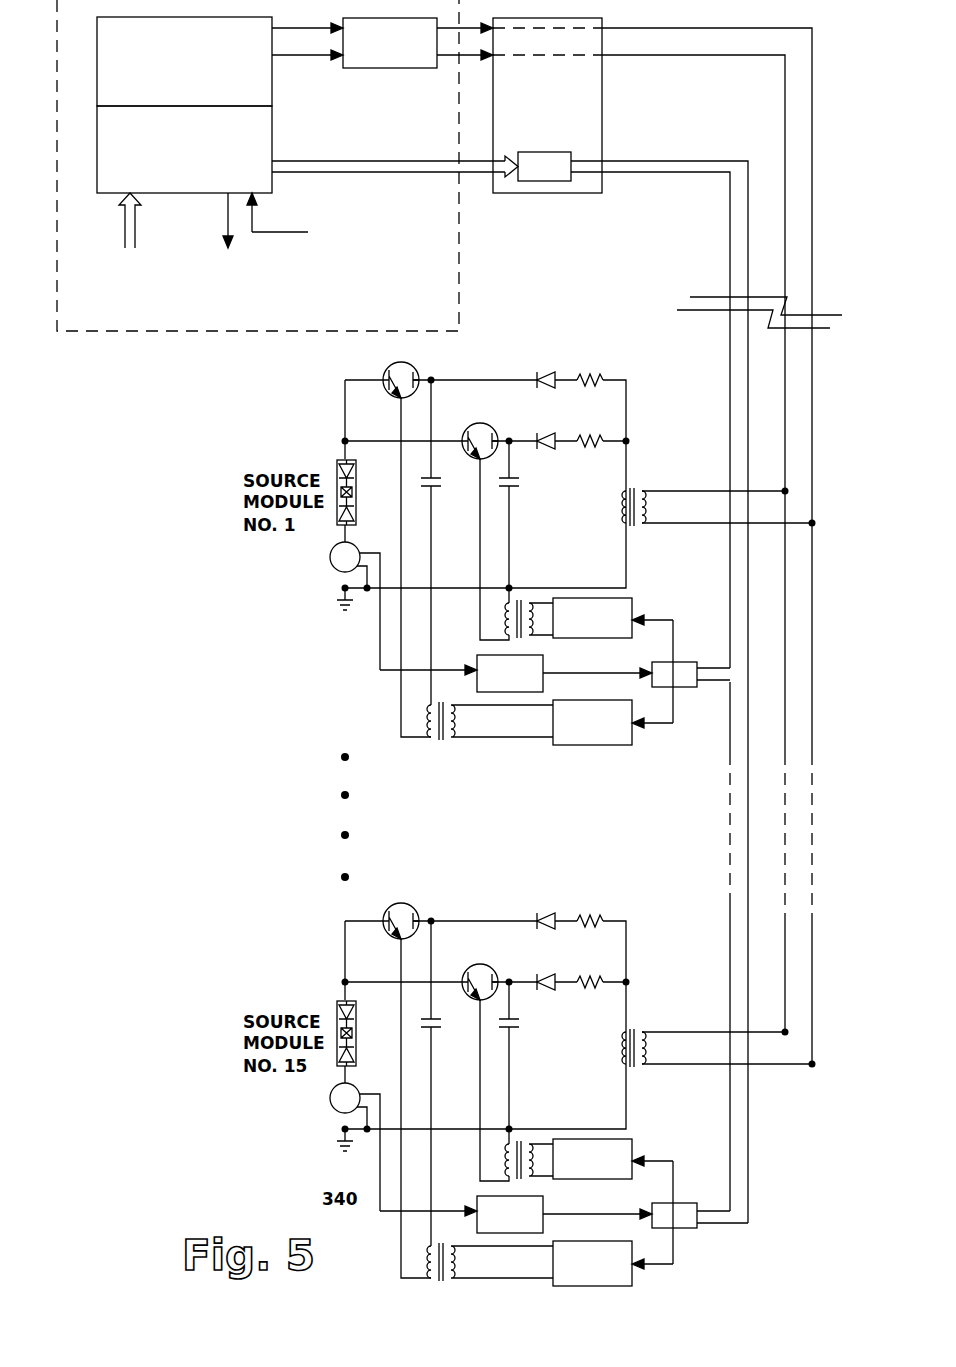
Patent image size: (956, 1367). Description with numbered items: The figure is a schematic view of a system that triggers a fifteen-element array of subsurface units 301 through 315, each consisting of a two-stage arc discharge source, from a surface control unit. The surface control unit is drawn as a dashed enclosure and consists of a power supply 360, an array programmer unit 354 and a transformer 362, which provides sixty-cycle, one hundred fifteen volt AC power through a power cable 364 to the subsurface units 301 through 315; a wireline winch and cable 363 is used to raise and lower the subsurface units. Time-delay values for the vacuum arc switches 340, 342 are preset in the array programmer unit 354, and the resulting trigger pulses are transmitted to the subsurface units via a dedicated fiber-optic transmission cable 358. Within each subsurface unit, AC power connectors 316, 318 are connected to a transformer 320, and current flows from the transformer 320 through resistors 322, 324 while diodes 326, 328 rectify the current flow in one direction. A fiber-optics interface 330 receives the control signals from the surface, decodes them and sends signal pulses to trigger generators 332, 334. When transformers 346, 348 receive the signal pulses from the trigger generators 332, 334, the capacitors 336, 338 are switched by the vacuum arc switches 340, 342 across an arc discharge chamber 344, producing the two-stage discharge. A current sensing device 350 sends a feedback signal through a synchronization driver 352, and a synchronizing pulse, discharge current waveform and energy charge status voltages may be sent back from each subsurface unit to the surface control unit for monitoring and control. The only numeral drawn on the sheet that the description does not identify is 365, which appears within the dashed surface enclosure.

The subsurface unit 301 is at (312, 623).
The subsurface unit 315 is at (312, 954).
The AC power connector 316 is at (787, 491).
The AC power connector 318 is at (814, 523).
The transformer 320 is at (632, 496).
The resistor 322 is at (590, 448).
The resistor 324 is at (585, 372).
The diode 326 is at (548, 432).
The diode 328 is at (548, 371).
The fiber-optics interface 330 is at (690, 688).
The trigger generator 332 is at (609, 628).
The trigger generator 334 is at (609, 732).
The capacitor 336 is at (518, 477).
The capacitor 338 is at (440, 477).
The vacuum arc switch 340 is at (493, 427).
The vacuum arc switch 342 is at (409, 365).
The arc discharge chamber 344 is at (337, 462).
The transformer 346 is at (517, 603).
The transformer 348 is at (437, 745).
The current sensing device 350 is at (332, 563).
The synchronization driver 352 is at (527, 683).
The array programmer unit 354 is at (194, 150).
The fiber-optic transmission cable 358 is at (730, 220).
The power supply 360 is at (194, 75).
The transformer 362 is at (406, 53).
The wireline winch and cable 363 is at (564, 103).
The power cable 364 is at (812, 97).
The central control unit 365 is at (364, 314).